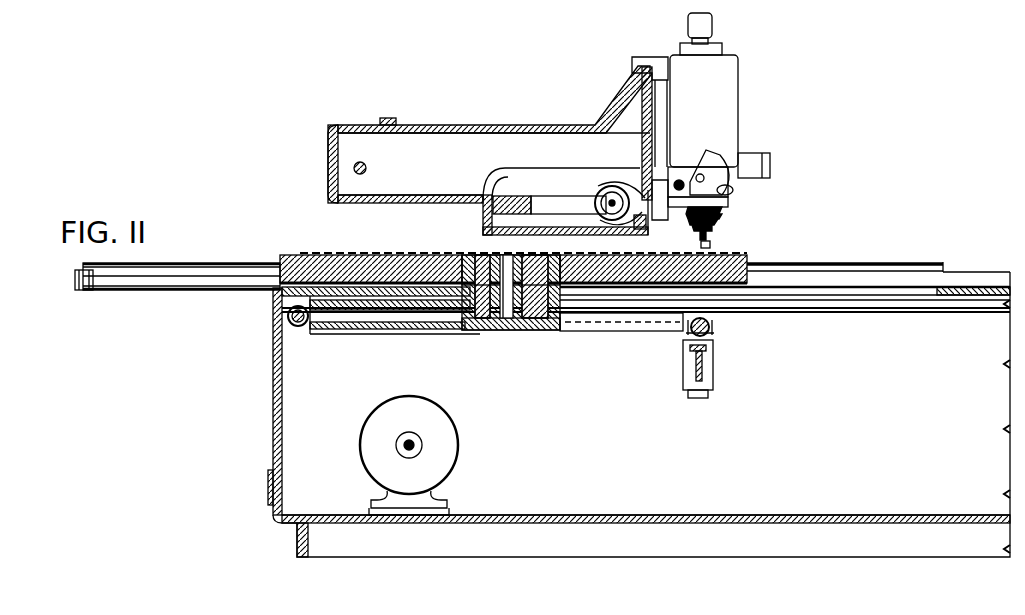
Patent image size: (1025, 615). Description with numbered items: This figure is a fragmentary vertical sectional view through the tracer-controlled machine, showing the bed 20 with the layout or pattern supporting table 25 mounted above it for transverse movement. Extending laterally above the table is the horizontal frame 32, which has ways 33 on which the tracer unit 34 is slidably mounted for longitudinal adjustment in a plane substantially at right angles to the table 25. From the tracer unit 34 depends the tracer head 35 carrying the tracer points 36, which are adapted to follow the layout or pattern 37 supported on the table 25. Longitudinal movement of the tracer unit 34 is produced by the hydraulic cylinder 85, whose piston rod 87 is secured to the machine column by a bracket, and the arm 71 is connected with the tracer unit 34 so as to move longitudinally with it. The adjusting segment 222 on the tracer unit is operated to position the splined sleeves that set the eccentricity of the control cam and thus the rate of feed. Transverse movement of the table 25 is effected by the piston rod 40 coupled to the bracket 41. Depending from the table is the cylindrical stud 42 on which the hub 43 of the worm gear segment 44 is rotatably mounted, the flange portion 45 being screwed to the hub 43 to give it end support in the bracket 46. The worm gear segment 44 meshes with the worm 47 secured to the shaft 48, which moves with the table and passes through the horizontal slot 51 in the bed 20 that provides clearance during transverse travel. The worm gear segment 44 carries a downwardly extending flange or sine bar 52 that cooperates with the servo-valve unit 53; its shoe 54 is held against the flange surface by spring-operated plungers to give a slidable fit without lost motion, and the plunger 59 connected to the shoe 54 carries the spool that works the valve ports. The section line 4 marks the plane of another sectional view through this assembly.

The section line 4- 4 is at (482, 85).
The bed 20 is at (275, 385).
The layout or pattern supporting table 25 is at (300, 253).
The horizontal frame 32 is at (365, 127).
The ways 33 is at (640, 65).
The tracer unit 34 is at (723, 120).
The tracer head 35 is at (718, 225).
The tracer points 36 is at (700, 248).
The layout or pattern 37 is at (394, 256).
The piston rod 40 is at (194, 286).
The bracket 41 is at (92, 291).
The cylindrical stud 42 is at (508, 326).
The hub 43 is at (495, 330).
The worm gear segment 44 is at (385, 311).
The flange portion 45 is at (488, 285).
The bracket 46 is at (452, 326).
The worm 47 is at (302, 327).
The shaft 48 is at (284, 318).
The horizontal slot 51 is at (350, 335).
The downwardly extending flange or sine bar 52 is at (620, 332).
The servo-valve unit 53 is at (710, 338).
The shoe 54 is at (712, 328).
The plunger 59 is at (686, 334).
The arm 71 is at (560, 205).
The hydraulic cylinder 85 is at (612, 188).
The piston rod 87 is at (604, 199).
The adjusting segment 222 is at (735, 186).